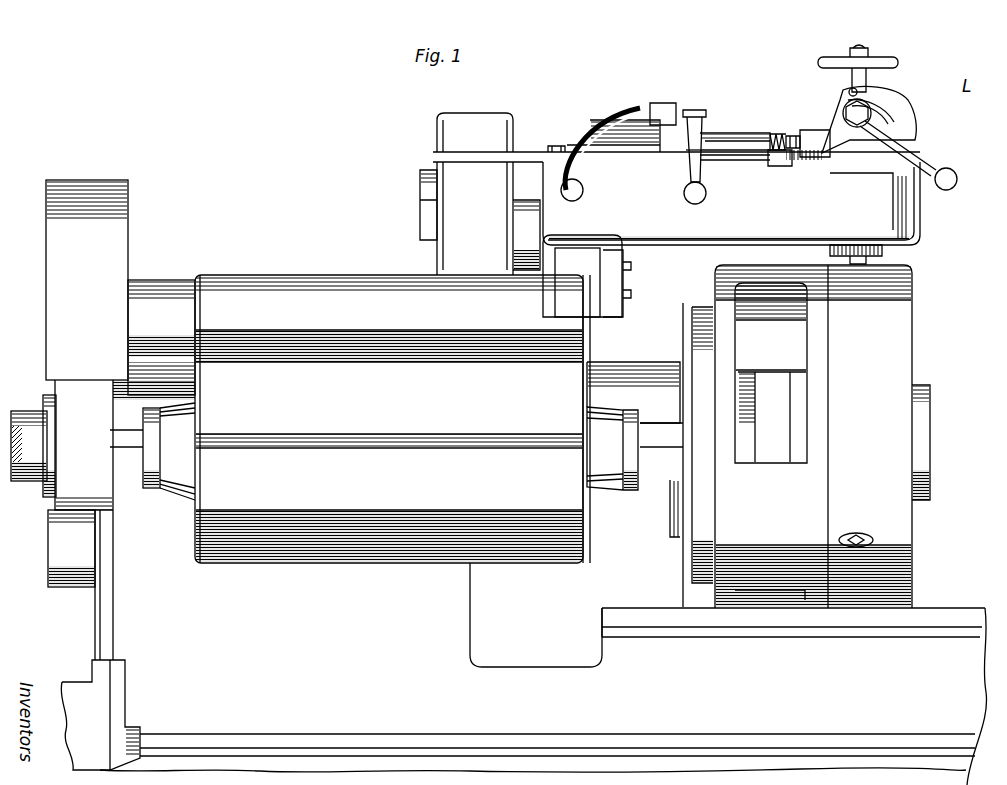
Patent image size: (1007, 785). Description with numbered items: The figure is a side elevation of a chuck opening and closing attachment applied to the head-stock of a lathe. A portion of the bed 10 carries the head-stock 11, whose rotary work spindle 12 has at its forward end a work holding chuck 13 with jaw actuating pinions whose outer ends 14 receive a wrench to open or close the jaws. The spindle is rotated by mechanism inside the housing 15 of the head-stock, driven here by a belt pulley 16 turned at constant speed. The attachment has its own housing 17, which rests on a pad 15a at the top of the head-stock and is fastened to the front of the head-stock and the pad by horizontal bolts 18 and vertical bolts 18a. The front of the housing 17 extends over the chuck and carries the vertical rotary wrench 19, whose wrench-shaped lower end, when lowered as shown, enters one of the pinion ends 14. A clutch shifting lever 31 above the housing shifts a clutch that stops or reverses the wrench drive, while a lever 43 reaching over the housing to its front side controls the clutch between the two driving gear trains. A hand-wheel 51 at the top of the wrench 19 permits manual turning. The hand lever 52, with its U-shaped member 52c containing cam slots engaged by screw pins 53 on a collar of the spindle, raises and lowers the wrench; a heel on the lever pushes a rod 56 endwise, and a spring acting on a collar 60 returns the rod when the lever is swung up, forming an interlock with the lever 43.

The bed 10 is at (948, 608).
The head-stock 11 is at (262, 275).
The rotary work spindle 12 is at (40, 485).
The work holding chuck 13 is at (905, 320).
The outer ends of pinions 14 is at (860, 534).
The housing of the head-stock 15 is at (495, 495).
The pad 15a is at (572, 258).
The belt pulley 16 is at (95, 181).
The housing 17 is at (900, 210).
The horizontal bolts 18 is at (630, 297).
The vertical bolts 18a is at (556, 145).
The chuck opening and closing member or wrench 19 is at (882, 260).
The clutch shifting lever 31 is at (721, 134).
The lever 43 is at (603, 122).
The hand-wheel 51 is at (878, 61).
The hand lever 52 is at (895, 109).
The U-shaped member 52c is at (902, 92).
The screw pins 53 is at (849, 92).
The rod 56 is at (794, 136).
The collar 60 is at (778, 133).